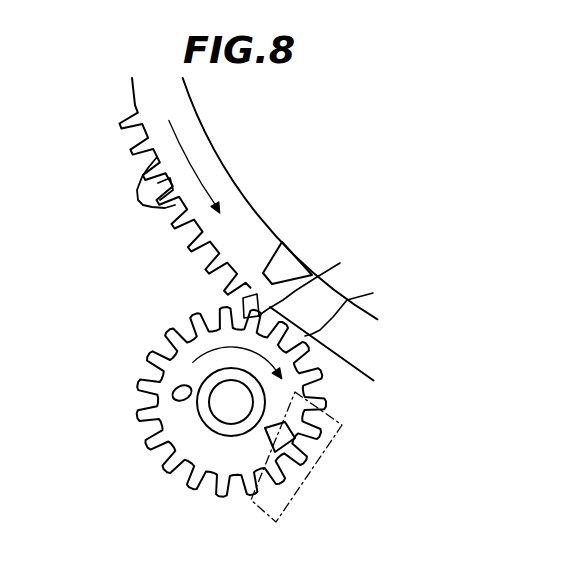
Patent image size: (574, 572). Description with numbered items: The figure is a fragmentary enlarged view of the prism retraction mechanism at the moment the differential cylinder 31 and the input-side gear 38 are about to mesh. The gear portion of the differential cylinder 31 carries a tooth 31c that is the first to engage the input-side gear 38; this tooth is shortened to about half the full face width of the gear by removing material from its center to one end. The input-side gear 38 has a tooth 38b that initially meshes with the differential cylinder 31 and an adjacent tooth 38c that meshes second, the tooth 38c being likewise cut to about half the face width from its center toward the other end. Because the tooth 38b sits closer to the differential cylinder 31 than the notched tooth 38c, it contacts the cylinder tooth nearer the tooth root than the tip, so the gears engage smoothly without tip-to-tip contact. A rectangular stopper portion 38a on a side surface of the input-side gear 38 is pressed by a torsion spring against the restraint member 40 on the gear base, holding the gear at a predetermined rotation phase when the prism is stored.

The differential cylinder 31 is at (212, 233).
The tooth 31c is at (240, 297).
The input-side gear 38 is at (150, 355).
The stopper portion 38a is at (226, 485).
The tooth 38b is at (350, 297).
The tooth 38c is at (340, 263).
The restraint member 40 is at (308, 470).